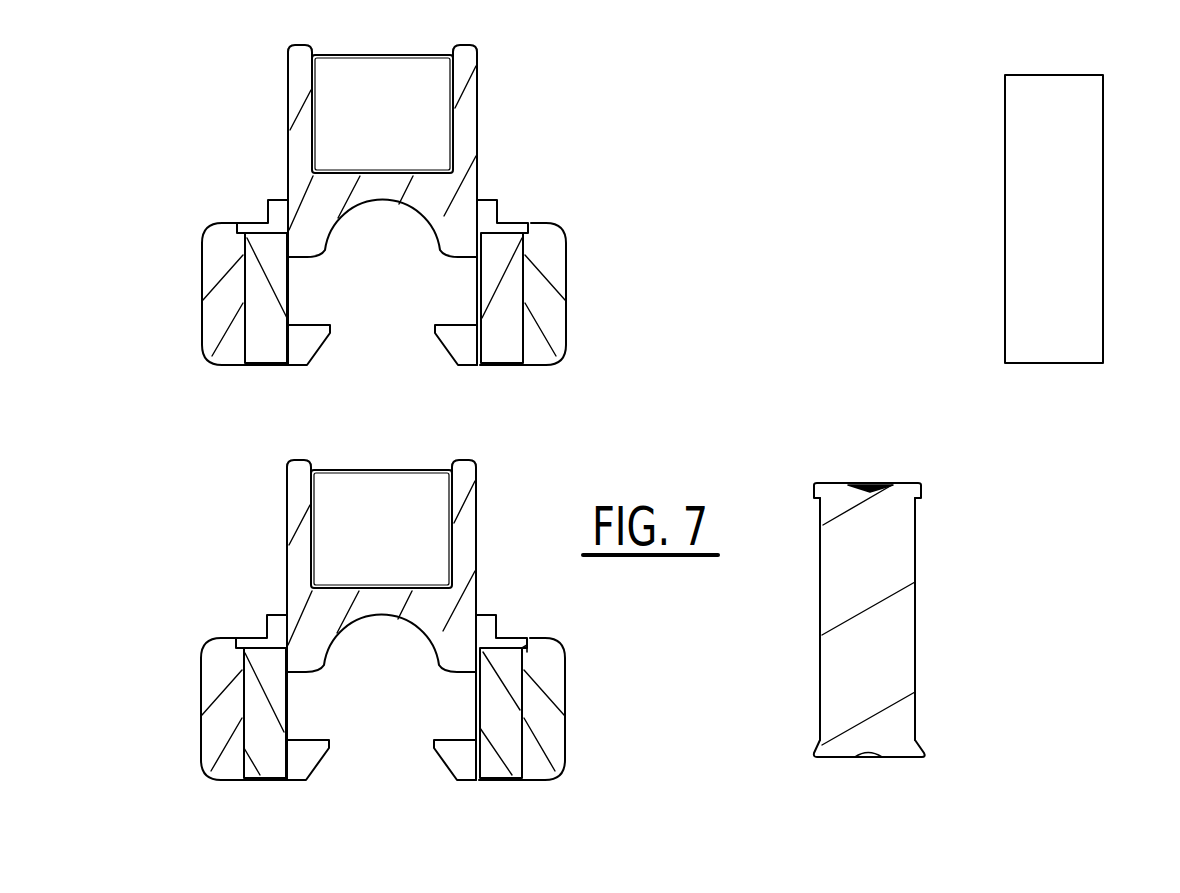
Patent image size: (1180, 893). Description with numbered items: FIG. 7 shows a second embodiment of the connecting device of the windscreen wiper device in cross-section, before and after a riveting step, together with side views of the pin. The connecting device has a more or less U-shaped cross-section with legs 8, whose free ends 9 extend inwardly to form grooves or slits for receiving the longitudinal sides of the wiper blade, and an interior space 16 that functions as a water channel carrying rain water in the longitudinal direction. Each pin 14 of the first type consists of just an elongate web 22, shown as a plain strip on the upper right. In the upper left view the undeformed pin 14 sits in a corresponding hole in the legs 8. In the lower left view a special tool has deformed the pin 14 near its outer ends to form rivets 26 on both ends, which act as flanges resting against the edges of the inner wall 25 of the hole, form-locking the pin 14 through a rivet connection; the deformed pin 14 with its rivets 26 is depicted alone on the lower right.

The legs 8 is at (215, 298).
The free ends 9 is at (445, 342).
The pin of the first type 14 is at (262, 357).
The interior space 16 is at (437, 126).
The elongate web 22 is at (848, 585).
The inner wall 25 is at (518, 698).
The rivets 26 is at (911, 487).